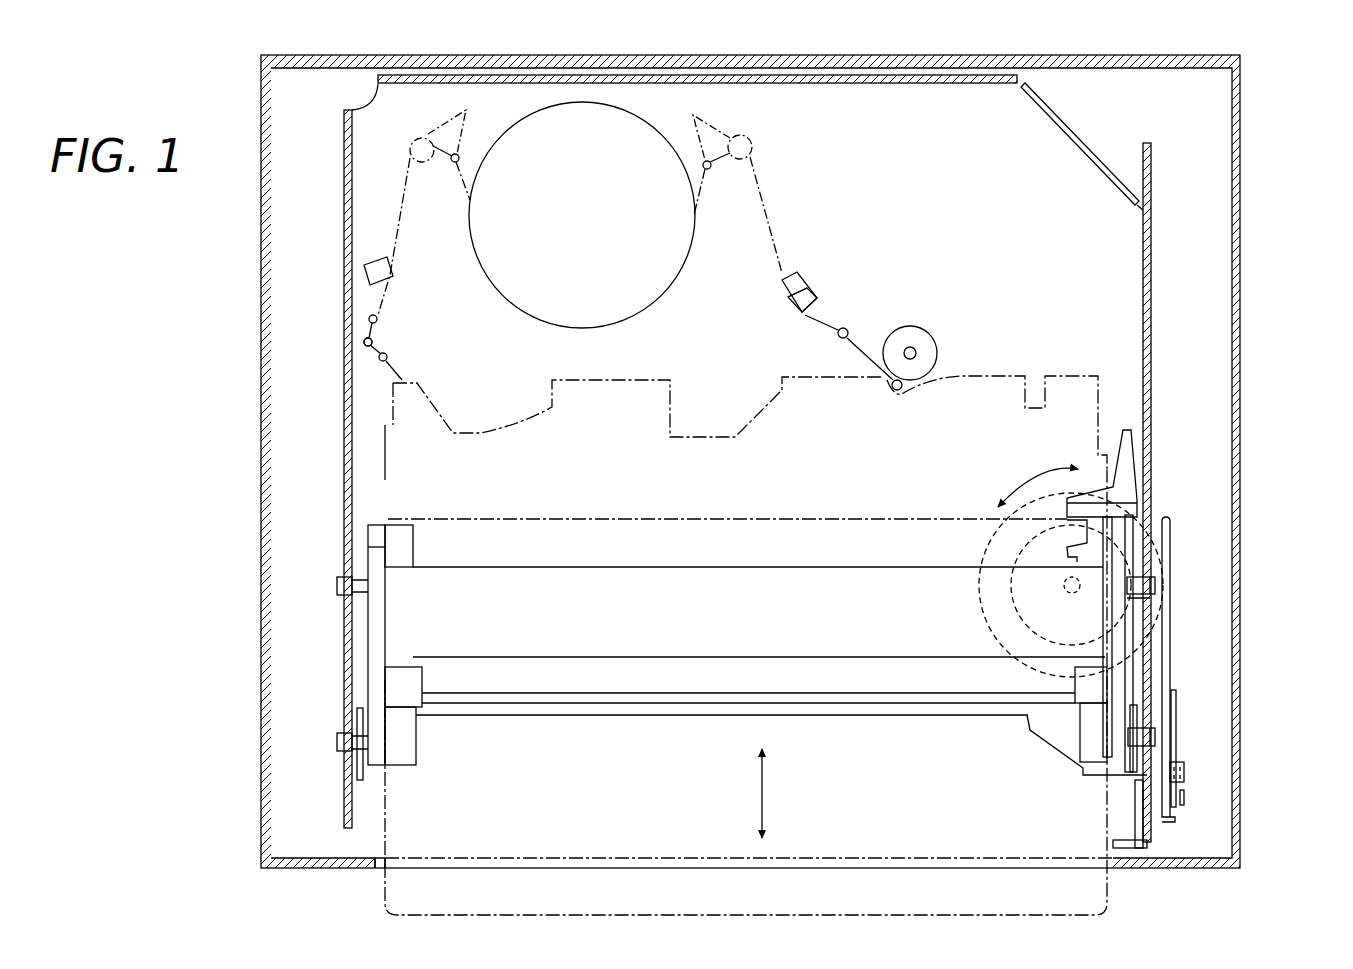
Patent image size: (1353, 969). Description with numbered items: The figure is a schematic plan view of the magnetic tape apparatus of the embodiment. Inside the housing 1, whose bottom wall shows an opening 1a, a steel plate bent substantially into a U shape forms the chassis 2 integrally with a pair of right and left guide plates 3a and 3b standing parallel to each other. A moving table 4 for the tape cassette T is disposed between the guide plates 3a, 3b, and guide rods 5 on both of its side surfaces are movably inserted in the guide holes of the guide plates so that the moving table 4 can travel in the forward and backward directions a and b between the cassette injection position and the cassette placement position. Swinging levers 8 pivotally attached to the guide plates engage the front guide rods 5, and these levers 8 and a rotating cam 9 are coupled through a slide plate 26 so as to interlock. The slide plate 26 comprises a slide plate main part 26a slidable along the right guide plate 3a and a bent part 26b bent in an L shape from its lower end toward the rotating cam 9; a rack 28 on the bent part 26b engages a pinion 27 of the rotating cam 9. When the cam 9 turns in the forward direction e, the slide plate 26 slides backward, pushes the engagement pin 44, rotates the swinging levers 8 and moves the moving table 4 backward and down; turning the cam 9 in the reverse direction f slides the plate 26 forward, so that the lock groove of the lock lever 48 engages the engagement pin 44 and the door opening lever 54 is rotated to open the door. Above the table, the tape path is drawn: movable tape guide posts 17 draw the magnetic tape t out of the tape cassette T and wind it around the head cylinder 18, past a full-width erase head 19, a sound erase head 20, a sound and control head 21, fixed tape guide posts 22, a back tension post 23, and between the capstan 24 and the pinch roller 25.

The housing 1 is at (262, 500).
The opening in case bottom 1a is at (378, 870).
The chassis 2 is at (1065, 172).
The right guide plate 3a is at (1152, 388).
The left guide plate 3b is at (343, 437).
The moving table 4 is at (790, 567).
The guide rods 5 is at (337, 586).
The swinging levers 8 is at (362, 777).
The rotating cam 9 is at (978, 628).
The movable tape guide posts 17 is at (581, 130).
The head cylinder 18 is at (540, 305).
The full-width erase head 19 is at (380, 262).
The sound erase head 20 is at (795, 273).
The sound and control head 21 is at (813, 297).
The fixed tape guide posts 22 is at (379, 358).
The back tension post 23 is at (375, 341).
The capstan 24 is at (897, 392).
The pinch roller 25 is at (923, 337).
The slide plate 26 is at (1256, 668).
The slide plate main part 26a is at (1160, 526).
The bent part 26b is at (1234, 741).
The pinion 27 is at (1012, 552).
The rack 28 is at (1135, 625).
The engagement pin 44 is at (1185, 770).
The lock lever 48 is at (1177, 714).
The door opening lever 54 is at (1132, 822).
The tape cassette T is at (722, 527).
The magnetic tape t is at (767, 210).
The forward direction a is at (747, 835).
The backward direction b is at (751, 787).
The forward direction e is at (1028, 488).
The reverse direction f is at (1067, 452).